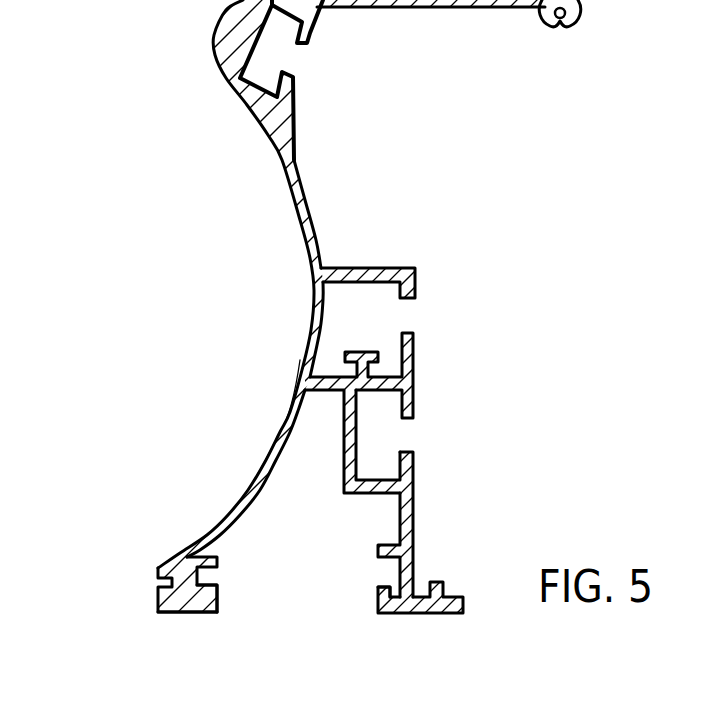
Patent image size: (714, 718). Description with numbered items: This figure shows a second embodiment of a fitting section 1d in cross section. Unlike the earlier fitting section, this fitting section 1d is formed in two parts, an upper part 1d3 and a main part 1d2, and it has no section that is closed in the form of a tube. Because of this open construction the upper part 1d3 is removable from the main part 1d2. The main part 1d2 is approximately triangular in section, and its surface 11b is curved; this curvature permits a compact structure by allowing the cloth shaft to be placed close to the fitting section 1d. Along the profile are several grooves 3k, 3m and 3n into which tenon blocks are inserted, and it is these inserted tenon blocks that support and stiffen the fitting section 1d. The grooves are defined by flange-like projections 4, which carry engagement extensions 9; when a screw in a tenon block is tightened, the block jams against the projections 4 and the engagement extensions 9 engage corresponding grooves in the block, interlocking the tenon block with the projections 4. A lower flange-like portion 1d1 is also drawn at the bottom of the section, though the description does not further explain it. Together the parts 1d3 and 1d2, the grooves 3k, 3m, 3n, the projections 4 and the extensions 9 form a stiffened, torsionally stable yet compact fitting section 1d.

The fitting section 1d is at (158, 512).
The lower flange of side wall 1d1 is at (157, 566).
The main part 1d2 is at (407, 568).
The upper part 1d3 is at (288, 133).
The surface 11b is at (272, 430).
The groove 3k is at (382, 313).
The groove 3m is at (382, 431).
The groove 3n is at (275, 583).
The projection 4 is at (190, 613).
The engagement extension 9 is at (217, 592).